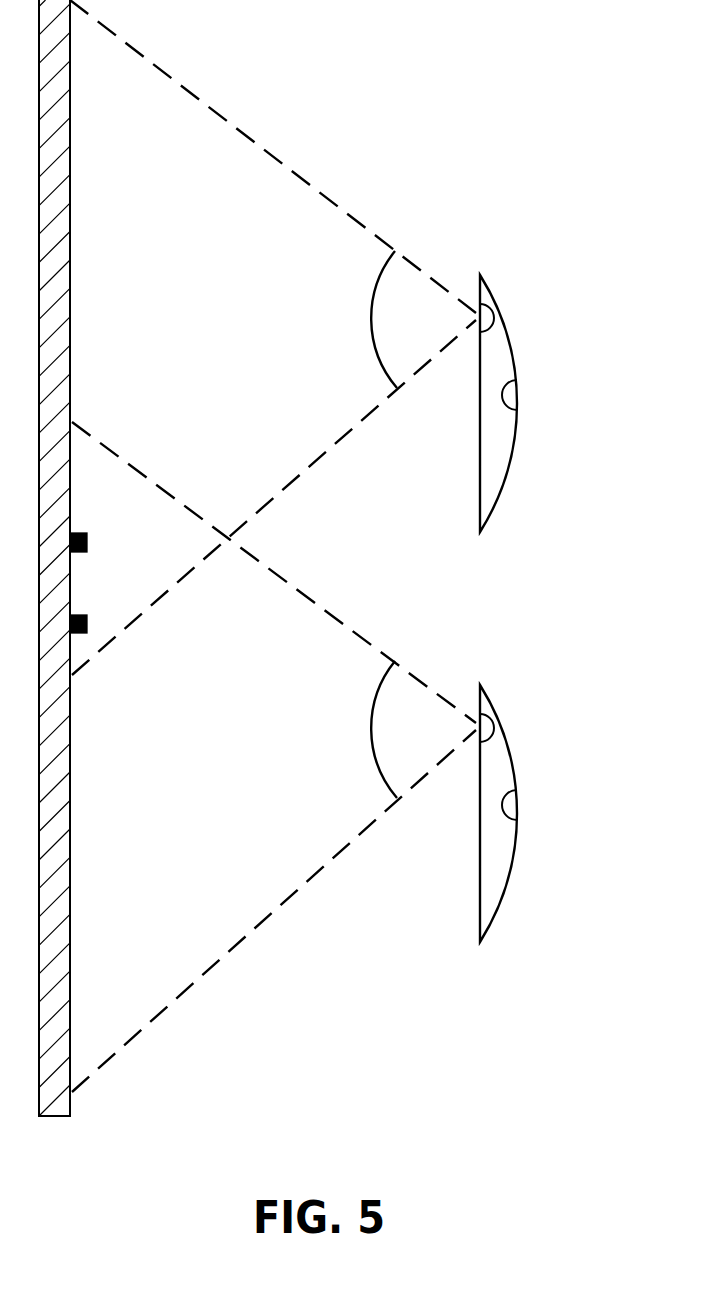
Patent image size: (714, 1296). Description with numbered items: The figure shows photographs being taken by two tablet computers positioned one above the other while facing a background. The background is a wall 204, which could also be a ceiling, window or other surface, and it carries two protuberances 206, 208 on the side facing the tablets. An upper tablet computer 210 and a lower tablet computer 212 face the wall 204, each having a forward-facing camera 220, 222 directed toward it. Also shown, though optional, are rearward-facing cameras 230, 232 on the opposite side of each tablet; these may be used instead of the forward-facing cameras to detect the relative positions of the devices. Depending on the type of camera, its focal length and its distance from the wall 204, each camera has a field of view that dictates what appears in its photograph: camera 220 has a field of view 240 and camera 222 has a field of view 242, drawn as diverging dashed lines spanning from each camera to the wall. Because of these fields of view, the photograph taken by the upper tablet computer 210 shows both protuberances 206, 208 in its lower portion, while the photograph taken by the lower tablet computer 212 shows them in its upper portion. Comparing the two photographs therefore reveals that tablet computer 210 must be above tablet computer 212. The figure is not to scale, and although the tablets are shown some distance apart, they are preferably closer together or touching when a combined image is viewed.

The wall 204 is at (60, 1102).
The protuberance 206 is at (87, 534).
The protuberance 208 is at (87, 617).
The tablet computer 210 is at (495, 480).
The tablet computer 212 is at (495, 890).
The forward-facing camera 220 is at (479, 306).
The forward-facing camera 222 is at (479, 716).
The rearward-facing camera 230 is at (518, 393).
The rearward-facing camera 232 is at (518, 803).
The field of view 240 is at (373, 340).
The field of view 242 is at (373, 750).